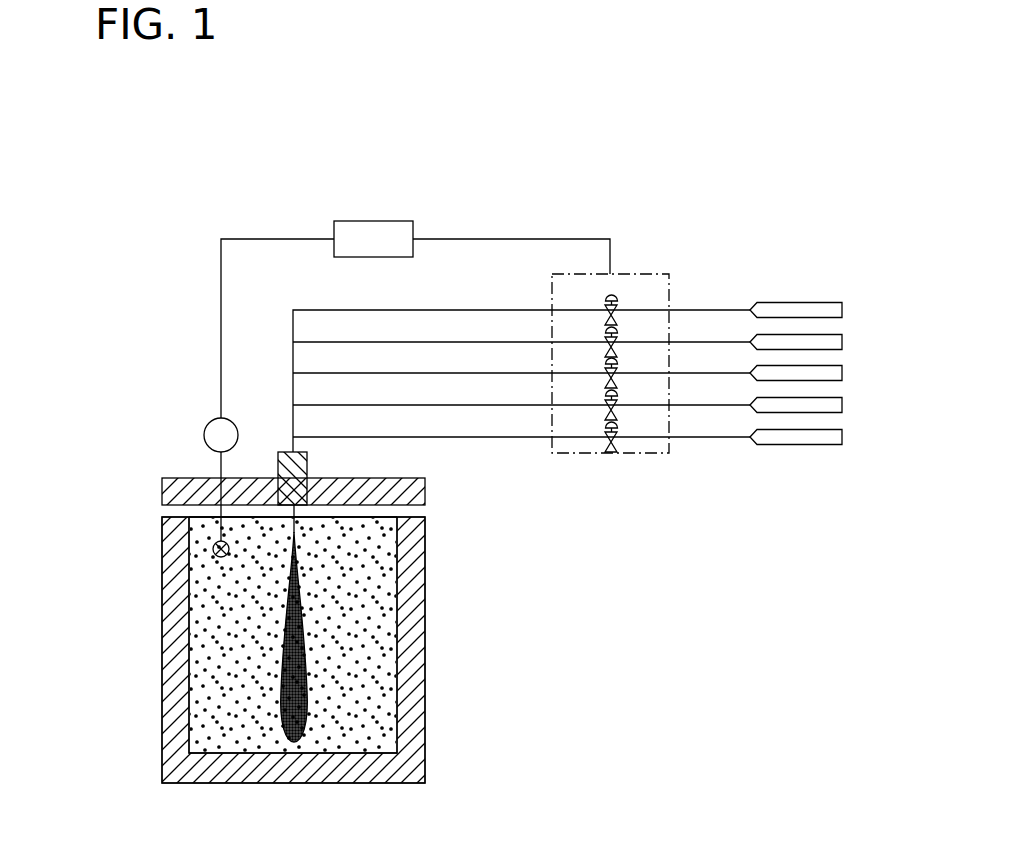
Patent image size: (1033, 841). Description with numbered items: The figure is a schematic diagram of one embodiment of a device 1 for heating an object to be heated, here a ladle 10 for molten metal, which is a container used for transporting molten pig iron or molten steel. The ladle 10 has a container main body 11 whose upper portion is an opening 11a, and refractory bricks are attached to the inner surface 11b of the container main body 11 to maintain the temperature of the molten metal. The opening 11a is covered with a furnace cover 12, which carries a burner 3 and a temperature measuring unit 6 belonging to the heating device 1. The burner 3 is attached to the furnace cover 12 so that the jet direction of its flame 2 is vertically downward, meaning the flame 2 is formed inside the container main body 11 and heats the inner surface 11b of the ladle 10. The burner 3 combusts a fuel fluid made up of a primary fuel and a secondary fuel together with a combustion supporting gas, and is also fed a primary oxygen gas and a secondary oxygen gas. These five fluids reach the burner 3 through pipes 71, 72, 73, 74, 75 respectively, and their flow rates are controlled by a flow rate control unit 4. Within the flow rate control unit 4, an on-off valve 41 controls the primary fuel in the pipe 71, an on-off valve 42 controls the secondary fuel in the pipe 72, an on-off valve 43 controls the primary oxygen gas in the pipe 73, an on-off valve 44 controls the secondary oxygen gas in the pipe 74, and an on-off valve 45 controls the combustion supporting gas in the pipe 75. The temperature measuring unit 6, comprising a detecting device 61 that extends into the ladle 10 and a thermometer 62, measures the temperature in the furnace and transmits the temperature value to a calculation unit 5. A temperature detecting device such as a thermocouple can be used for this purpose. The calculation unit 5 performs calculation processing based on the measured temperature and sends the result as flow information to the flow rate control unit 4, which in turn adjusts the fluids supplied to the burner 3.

The device for heating an object to be heated 1 is at (200, 172).
The flame 2 is at (302, 718).
The burner 3 is at (307, 464).
The flow rate control unit 4 is at (655, 247).
The calculation unit 5 is at (390, 220).
The temperature measuring unit 6 is at (93, 371).
The ladle for molten metal 10 is at (100, 534).
The container main body 11 is at (420, 648).
The opening 11a is at (412, 510).
The inner surface 11b is at (395, 577).
The furnace cover 12 is at (425, 492).
The on-off valve 41 is at (620, 303).
The on-off valve 42 is at (620, 335).
The on-off valve 43 is at (620, 366).
The on-off valve 44 is at (620, 398).
The on-off valve 45 is at (620, 430).
The detecting device 61 is at (212, 545).
The thermometer 62 is at (204, 435).
The pipe 71 is at (452, 310).
The pipe 72 is at (452, 342).
The pipe 73 is at (452, 373).
The pipe 74 is at (452, 405).
The pipe 75 is at (452, 437).